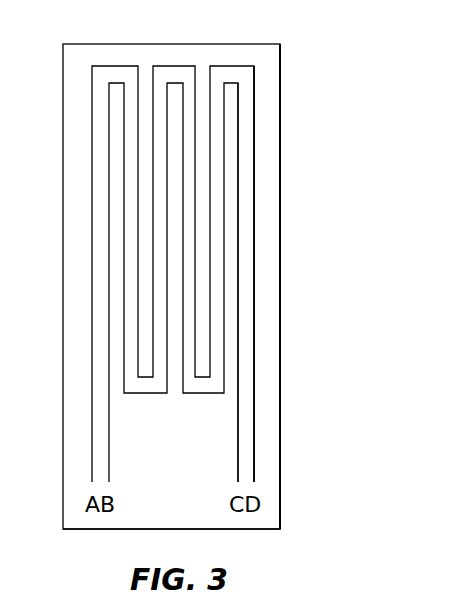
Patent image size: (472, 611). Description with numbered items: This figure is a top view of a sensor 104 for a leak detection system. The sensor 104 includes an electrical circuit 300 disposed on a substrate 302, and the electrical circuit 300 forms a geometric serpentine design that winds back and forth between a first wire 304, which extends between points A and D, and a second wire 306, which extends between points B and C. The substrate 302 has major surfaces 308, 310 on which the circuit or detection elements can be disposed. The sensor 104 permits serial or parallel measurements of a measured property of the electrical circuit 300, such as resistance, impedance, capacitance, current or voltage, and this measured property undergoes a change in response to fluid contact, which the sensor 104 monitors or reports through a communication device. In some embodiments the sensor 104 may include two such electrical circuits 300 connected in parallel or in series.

The sensor 104 is at (319, 73).
The electrical circuit 300 is at (108, 70).
The substrate 302 is at (280, 465).
The first wire 304 is at (254, 387).
The second wire 306 is at (237, 458).
The major surface 308 is at (262, 193).
The major surface 310 is at (280, 277).